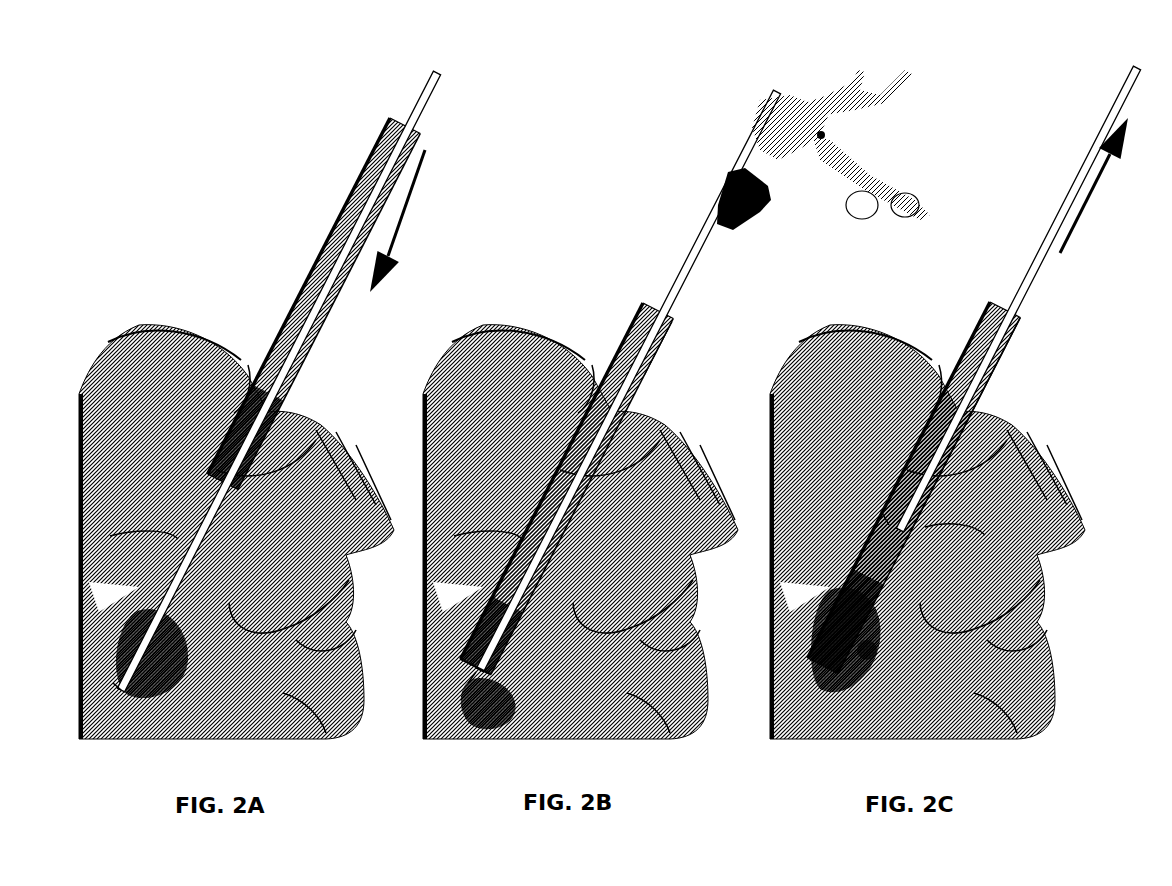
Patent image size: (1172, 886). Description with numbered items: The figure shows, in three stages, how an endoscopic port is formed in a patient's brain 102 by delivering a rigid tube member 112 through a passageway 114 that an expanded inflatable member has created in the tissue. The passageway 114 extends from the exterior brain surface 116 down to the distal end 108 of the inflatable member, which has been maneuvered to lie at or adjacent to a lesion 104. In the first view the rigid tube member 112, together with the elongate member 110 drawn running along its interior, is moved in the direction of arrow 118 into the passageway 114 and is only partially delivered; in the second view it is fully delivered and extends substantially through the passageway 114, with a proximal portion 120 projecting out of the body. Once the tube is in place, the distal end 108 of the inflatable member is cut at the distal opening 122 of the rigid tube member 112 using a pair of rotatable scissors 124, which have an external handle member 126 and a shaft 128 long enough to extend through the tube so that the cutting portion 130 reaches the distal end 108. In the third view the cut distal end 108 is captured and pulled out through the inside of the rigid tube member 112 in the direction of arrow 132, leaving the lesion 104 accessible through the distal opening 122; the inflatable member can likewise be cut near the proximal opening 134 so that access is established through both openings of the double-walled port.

In FIG. 2A, the brain 102 is at (297, 697).
In FIG. 2B, the brain 102 is at (633, 693).
In FIG. 2C, the brain 102 is at (975, 689).
In FIG. 2A, the lesion 104 is at (173, 660).
In FIG. 2B, the lesion 104 is at (520, 657).
In FIG. 2C, the lesion 104 is at (867, 650).
In FIG. 2A, the distal end of inflatable member 108 is at (113, 683).
In FIG. 2B, the distal end of inflatable member 108 is at (468, 683).
In FIG. 2C, the distal end of inflatable member 108 is at (881, 511).
In FIG. 2A, the obturator 110 is at (440, 72).
In FIG. 2B, the obturator 110 is at (780, 85).
In FIG. 2C, the obturator 110 is at (1135, 67).
In FIG. 2A, the rigid tube member 112 is at (352, 192).
In FIG. 2B, the rigid tube member 112 is at (642, 313).
In FIG. 2C, the rigid tube member 112 is at (988, 310).
In FIG. 2A, the passageway 114 is at (187, 517).
In FIG. 2B, the passageway 114 is at (522, 539).
In FIG. 2C, the passageway 114 is at (925, 527).
In FIG. 2A, the exterior brain surface 116 is at (234, 410).
In FIG. 2B, the exterior brain surface 116 is at (578, 413).
In FIG. 2C, the exterior brain surface 116 is at (933, 411).
In FIG. 2A, the arrow 118 is at (431, 175).
In FIG. 2B, the proximal portion of rigid tube member 120 is at (628, 433).
In FIG. 2C, the distal opening of rigid tube member 122 is at (813, 670).
In FIG. 2B, the rotatable scissors 124 is at (852, 135).
In FIG. 2B, the external handle member 126 is at (790, 100).
In FIG. 2B, the shaft 128 is at (722, 237).
In FIG. 2B, the cutting portion 130 is at (463, 660).
In FIG. 2C, the arrow 132 is at (1080, 222).
In FIG. 2C, the proximal opening of rigid tube member 134 is at (1020, 316).